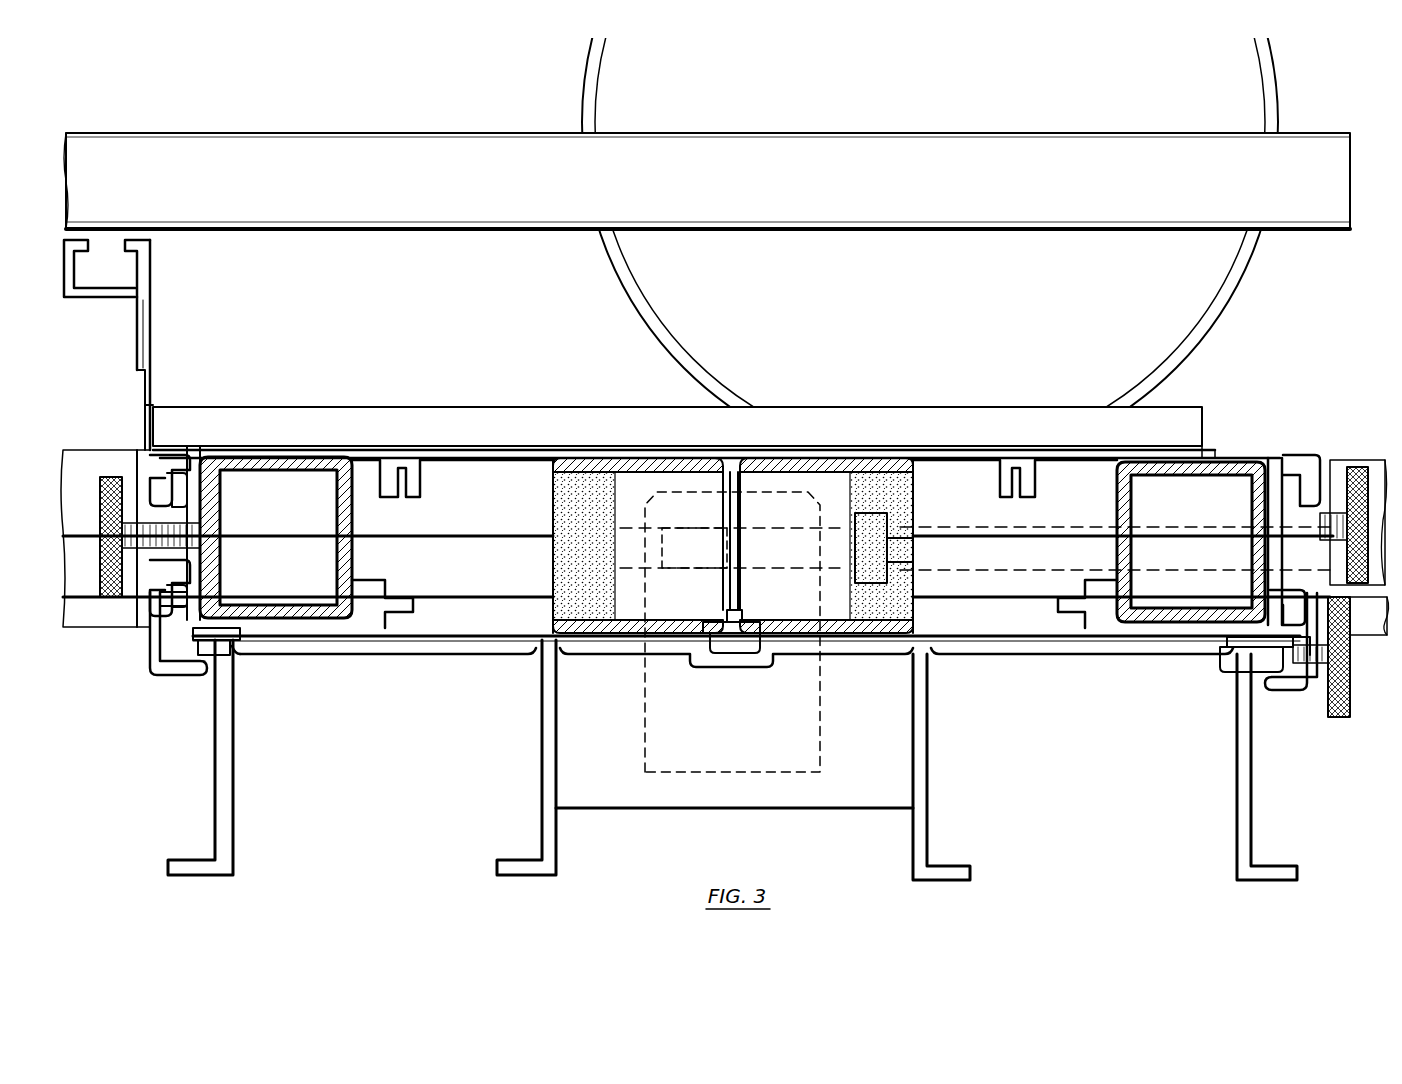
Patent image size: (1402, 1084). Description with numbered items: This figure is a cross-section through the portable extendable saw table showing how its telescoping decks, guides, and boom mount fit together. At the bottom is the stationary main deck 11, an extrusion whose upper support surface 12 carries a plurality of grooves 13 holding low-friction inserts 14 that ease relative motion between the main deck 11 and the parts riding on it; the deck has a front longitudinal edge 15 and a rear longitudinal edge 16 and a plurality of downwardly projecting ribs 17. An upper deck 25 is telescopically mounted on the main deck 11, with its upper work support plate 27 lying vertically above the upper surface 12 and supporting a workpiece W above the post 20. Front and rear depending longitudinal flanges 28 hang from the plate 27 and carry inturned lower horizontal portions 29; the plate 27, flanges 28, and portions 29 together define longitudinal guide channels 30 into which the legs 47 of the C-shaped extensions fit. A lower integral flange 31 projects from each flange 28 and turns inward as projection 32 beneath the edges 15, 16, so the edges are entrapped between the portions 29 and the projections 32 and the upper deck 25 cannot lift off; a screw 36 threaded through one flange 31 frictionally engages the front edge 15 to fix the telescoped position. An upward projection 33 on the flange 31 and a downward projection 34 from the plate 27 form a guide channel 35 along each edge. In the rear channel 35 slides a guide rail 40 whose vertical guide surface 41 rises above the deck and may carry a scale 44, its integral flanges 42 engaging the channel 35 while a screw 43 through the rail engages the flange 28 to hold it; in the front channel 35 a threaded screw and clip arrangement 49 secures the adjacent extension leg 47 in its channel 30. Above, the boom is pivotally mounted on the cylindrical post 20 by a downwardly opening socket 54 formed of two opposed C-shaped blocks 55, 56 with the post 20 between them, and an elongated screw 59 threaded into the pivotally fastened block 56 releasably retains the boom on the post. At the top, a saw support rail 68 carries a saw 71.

The main deck 11 is at (957, 646).
The upper support surface 12 is at (657, 637).
The grooves 13 is at (710, 650).
The inserts 14 is at (748, 643).
The front longitudinal edge 15 is at (1295, 672).
The rear longitudinal edge 16 is at (160, 675).
The downwardly projecting ribs 17 is at (233, 801).
The post 20 is at (803, 738).
The upper deck 25 is at (1256, 450).
The upper work support plate 27 is at (1216, 446).
The depending longitudinal flanges 28 is at (210, 600).
The inturned lower horizontal portions 29 is at (360, 625).
The longitudinal guide channels 30 is at (305, 558).
The lower integral flange 31 is at (148, 656).
The inward projection 32 is at (181, 682).
The upward projection 33 is at (155, 610).
The downward projection 34 is at (158, 478).
The guide channel 35 is at (178, 545).
The screw 36 is at (1345, 693).
The guide rail 40 is at (94, 298).
The vertical guide surface 41 is at (148, 400).
The integral flanges 42 is at (178, 480).
The screw 43 is at (103, 492).
The scale 44 is at (148, 348).
The legs 47 is at (345, 515).
The threaded screw and clip arrangement 49 is at (1355, 468).
The socket 54 is at (677, 426).
The C-shaped block 55 is at (630, 603).
The C-shaped block 56 is at (832, 607).
The elongated screw 59 is at (907, 551).
The saw support rail 68 is at (537, 191).
The saw 71 is at (622, 280).
The workpiece W is at (583, 415).